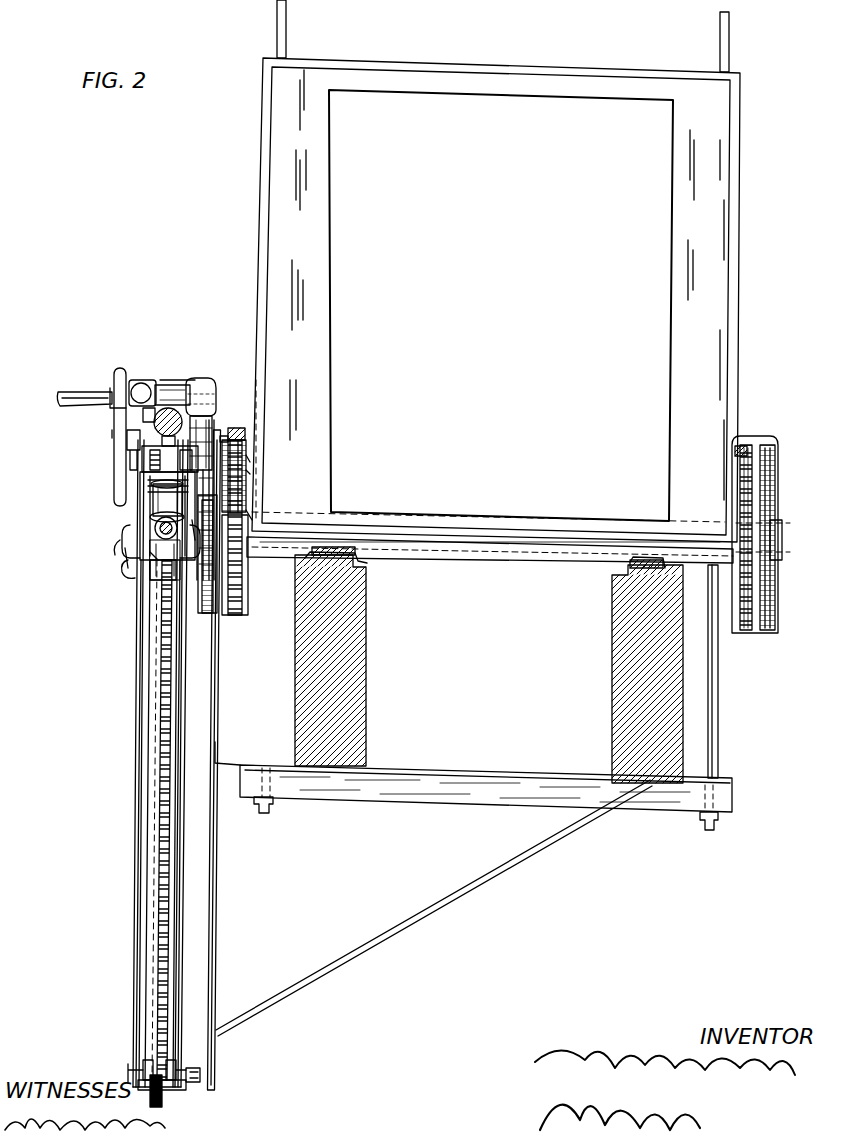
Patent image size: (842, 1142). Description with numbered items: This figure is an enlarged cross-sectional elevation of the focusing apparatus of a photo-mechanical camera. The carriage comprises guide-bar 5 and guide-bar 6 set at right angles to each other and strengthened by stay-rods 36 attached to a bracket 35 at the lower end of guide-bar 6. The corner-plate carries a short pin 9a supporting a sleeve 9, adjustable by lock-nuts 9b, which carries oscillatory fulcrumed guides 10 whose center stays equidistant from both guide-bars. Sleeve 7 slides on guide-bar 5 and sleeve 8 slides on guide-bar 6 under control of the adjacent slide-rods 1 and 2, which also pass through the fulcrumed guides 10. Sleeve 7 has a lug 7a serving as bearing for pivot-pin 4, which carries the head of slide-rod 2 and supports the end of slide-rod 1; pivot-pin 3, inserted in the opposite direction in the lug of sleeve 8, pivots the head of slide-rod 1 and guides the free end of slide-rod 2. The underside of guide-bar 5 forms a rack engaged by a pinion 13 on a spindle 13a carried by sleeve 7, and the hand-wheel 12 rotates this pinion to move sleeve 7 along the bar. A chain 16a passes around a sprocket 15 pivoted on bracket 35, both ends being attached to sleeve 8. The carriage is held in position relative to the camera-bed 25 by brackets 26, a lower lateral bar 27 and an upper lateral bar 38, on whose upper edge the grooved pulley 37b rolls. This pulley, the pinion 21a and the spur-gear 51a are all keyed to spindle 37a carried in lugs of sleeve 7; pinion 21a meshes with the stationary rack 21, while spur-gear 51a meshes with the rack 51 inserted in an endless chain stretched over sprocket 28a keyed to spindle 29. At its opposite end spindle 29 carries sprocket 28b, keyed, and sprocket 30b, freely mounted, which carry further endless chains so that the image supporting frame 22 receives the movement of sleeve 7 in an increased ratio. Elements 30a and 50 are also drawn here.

The slide-rod 1 is at (140, 383).
The slide-rod 2 is at (203, 385).
The pivot-pin 3 is at (125, 552).
The pivot-pin 4 is at (150, 380).
The guide-bar 5 is at (178, 386).
The guide-bar 6 is at (152, 652).
The sleeve 7 is at (188, 396).
The lug 7a is at (166, 384).
The sleeve 8 is at (158, 578).
The sleeve 9 is at (165, 502).
The short pin 9a is at (150, 556).
The lock-nuts 9b is at (150, 542).
The fulcrumed guides 10 is at (146, 536).
The hand-wheel 12 is at (114, 424).
The pinion 13 is at (128, 444).
The spindle 13a is at (114, 432).
The sprocket 15 is at (165, 1098).
The chain 16a is at (165, 698).
The stationary rack 21 is at (250, 508).
The pinion 21a is at (246, 458).
The image supporting frame 22 is at (496, 271).
The camera-bed 25 is at (371, 660).
The brackets 26 is at (218, 880).
The lower lateral bar 27 is at (205, 1076).
The sprocket 28a is at (243, 617).
The sprocket 28b is at (745, 636).
The spindle 29 is at (782, 540).
The roller 30a is at (210, 616).
The sprocket 30b is at (782, 638).
The bracket 35 is at (140, 1058).
The stay-rods 36 is at (138, 806).
The spindle 37a is at (140, 478).
The grooved pulley 37b is at (222, 440).
The upper lateral bar 38 is at (246, 516).
The pinion 50 is at (218, 444).
The rack 51 is at (246, 438).
The spur-gear 51a is at (246, 472).